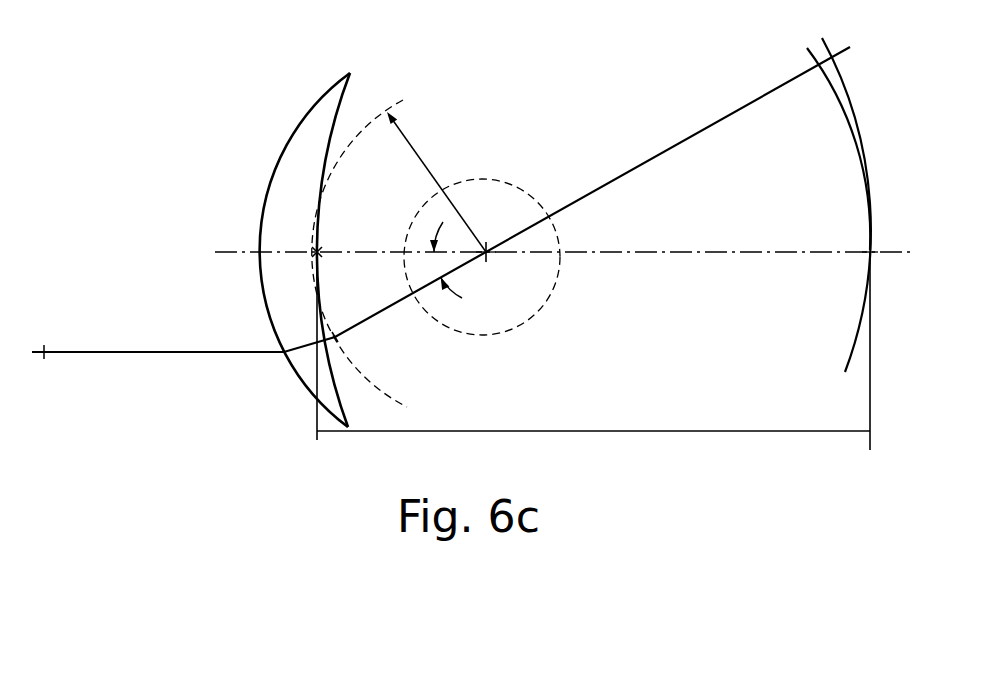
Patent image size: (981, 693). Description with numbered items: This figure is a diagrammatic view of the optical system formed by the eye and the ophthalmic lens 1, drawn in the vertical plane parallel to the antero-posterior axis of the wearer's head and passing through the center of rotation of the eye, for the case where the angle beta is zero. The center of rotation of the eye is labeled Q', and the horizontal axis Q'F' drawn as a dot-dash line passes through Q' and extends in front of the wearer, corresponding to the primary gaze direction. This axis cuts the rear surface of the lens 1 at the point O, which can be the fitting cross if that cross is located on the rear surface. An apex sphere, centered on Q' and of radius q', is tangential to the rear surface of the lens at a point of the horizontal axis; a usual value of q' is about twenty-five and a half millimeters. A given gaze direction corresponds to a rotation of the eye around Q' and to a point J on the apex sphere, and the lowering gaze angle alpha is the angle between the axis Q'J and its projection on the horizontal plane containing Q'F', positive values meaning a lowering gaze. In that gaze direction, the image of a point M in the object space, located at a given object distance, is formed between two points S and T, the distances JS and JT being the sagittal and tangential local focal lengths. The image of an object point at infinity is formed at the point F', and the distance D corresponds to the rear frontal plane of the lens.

The ophthalmic lens 1 is at (295, 377).
The point O is at (307, 238).
The point M in the object space M is at (76, 369).
The point J of the apex sphere J is at (354, 349).
The center of rotation of the eye Q' is at (491, 233).
The radius of the apex sphere q' is at (436, 182).
The point T is at (829, 139).
The point S is at (846, 193).
The point F' is at (856, 234).